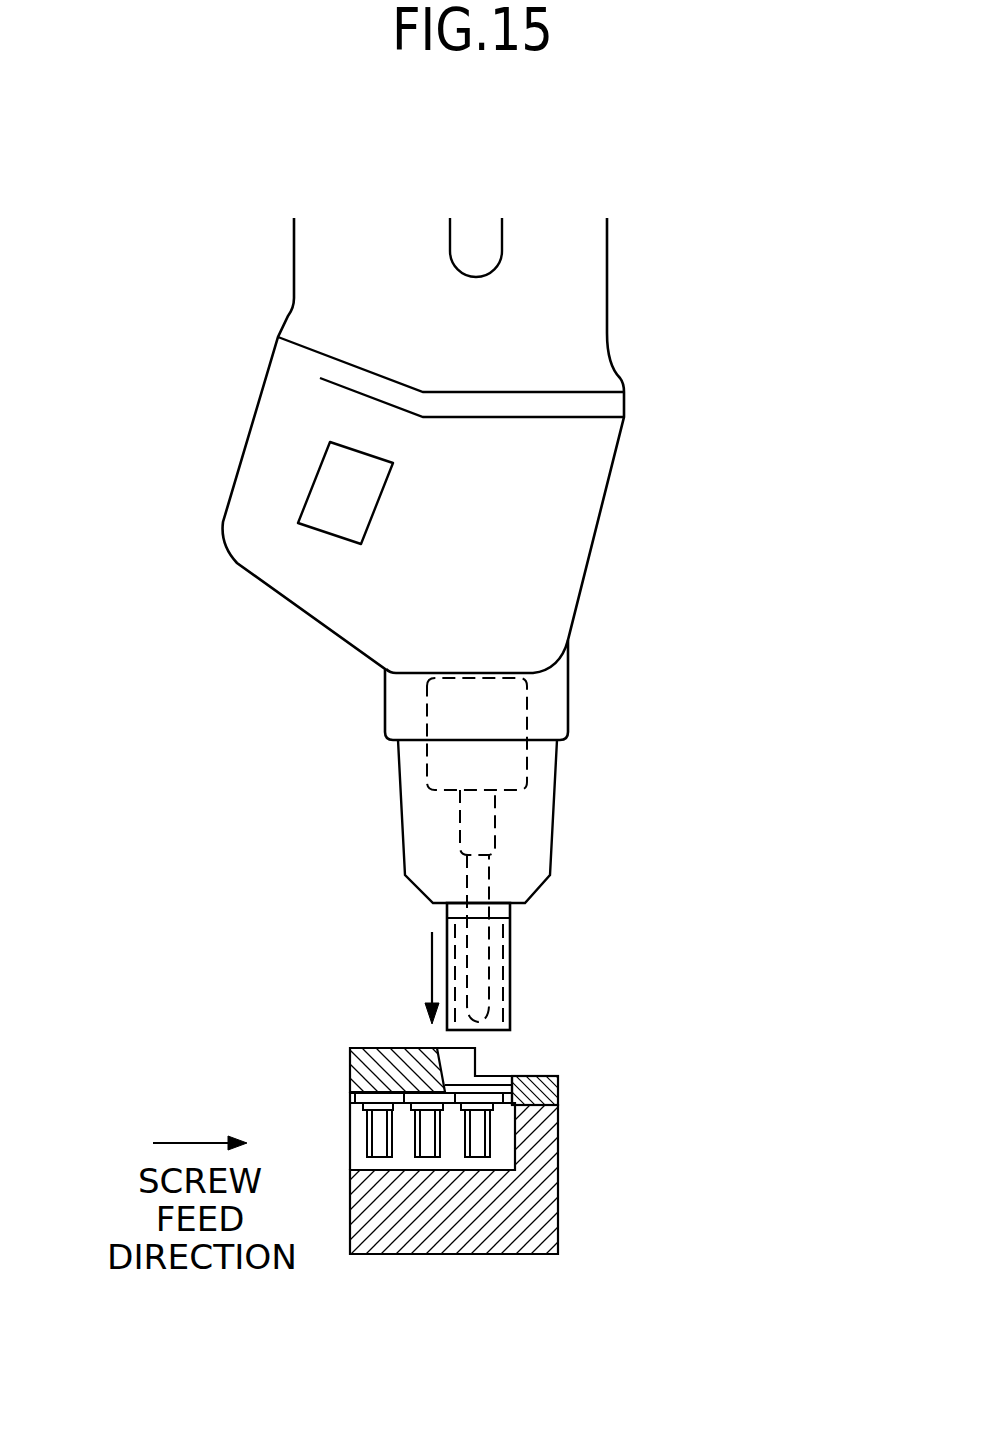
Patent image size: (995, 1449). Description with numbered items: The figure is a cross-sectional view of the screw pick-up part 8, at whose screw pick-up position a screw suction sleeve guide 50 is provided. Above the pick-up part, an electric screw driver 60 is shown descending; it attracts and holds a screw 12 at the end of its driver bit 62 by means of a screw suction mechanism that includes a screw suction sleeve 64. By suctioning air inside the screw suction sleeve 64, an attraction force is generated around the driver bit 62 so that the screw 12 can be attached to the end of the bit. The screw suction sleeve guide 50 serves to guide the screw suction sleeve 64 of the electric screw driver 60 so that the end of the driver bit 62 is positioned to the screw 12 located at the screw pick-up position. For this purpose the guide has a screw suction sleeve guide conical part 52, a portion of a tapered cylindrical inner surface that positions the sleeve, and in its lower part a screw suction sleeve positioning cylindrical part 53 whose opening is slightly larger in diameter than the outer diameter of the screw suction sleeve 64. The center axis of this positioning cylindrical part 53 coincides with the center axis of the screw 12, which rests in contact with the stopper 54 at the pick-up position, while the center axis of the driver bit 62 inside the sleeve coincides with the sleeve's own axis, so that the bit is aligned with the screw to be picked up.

The electric screw driver 60 is at (578, 300).
The screw suction sleeve 64 is at (510, 943).
The driver bit 62 is at (517, 987).
The screw suction sleeve guide 50 is at (374, 1056).
The screw suction sleeve guide conical part 52 is at (443, 1067).
The stopper 54 is at (520, 1107).
The screw suction sleeve positioning cylindrical part 53 is at (465, 1092).
The screw pick-up part 8 is at (540, 1214).
The screw 12 is at (374, 1133).